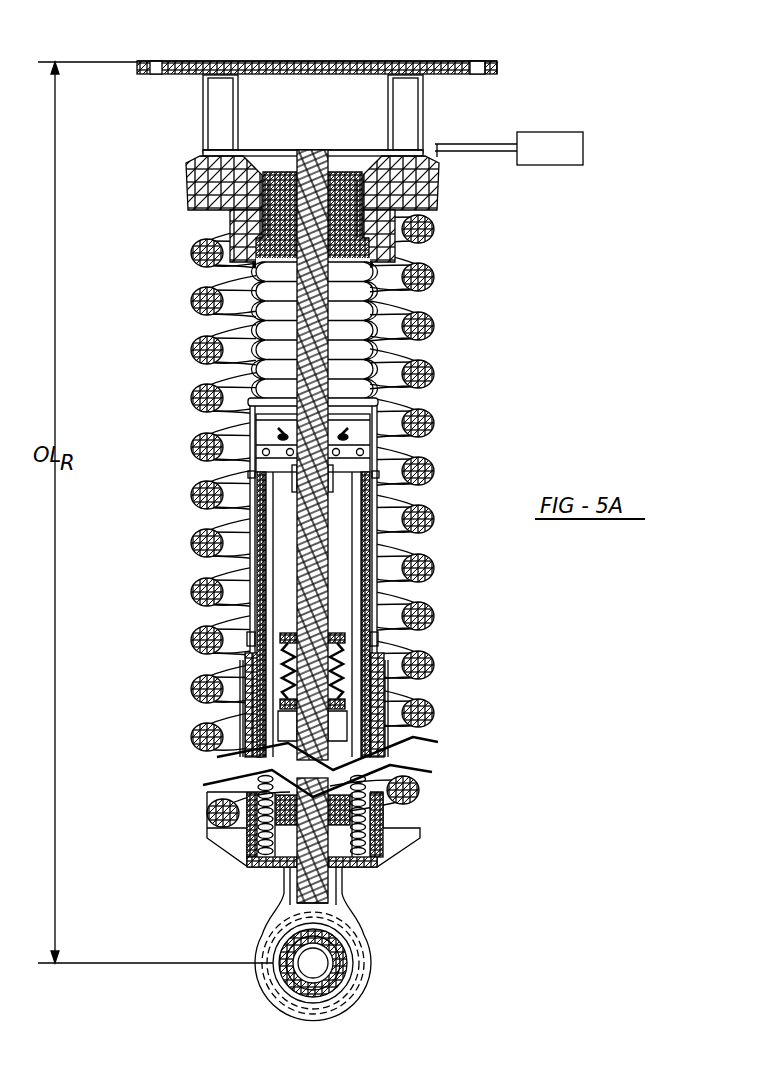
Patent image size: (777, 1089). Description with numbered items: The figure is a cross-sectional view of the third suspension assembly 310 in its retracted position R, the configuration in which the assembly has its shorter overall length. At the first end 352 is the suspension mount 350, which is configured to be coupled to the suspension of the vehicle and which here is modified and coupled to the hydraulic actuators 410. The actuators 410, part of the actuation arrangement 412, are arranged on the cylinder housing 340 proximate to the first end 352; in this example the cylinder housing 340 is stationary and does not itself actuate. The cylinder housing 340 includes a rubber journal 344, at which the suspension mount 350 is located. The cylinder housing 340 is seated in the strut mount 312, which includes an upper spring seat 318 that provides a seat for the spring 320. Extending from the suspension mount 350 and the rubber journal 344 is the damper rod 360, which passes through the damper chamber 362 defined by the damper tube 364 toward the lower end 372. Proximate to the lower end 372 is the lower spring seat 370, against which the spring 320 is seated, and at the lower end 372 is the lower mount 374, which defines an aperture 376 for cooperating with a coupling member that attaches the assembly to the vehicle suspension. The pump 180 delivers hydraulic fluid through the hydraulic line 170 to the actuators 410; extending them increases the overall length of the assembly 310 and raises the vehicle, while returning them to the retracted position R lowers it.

The third suspension assembly 310 is at (626, 110).
The suspension mount 350 is at (295, 62).
The first end 352 is at (377, 62).
The retracted position R is at (257, 64).
The hydraulic actuators 410 is at (205, 111).
The fastener assembly 412 is at (163, 128).
The rubber journal 344 is at (185, 157).
The cylinder housing 340 is at (220, 193).
The upper spring seat 318 is at (433, 210).
The strut mount 312 is at (163, 187).
The hydraulic line 170 is at (475, 152).
The pump 180 is at (583, 148).
The spring 320 is at (420, 467).
The damper tube 364 is at (355, 609).
The damper chamber 362 is at (343, 578).
The lower spring seat 370 is at (403, 833).
The damper rod 360 is at (315, 542).
The lower end 372 is at (368, 990).
The lower mount 374 is at (372, 966).
The aperture 376 is at (318, 960).